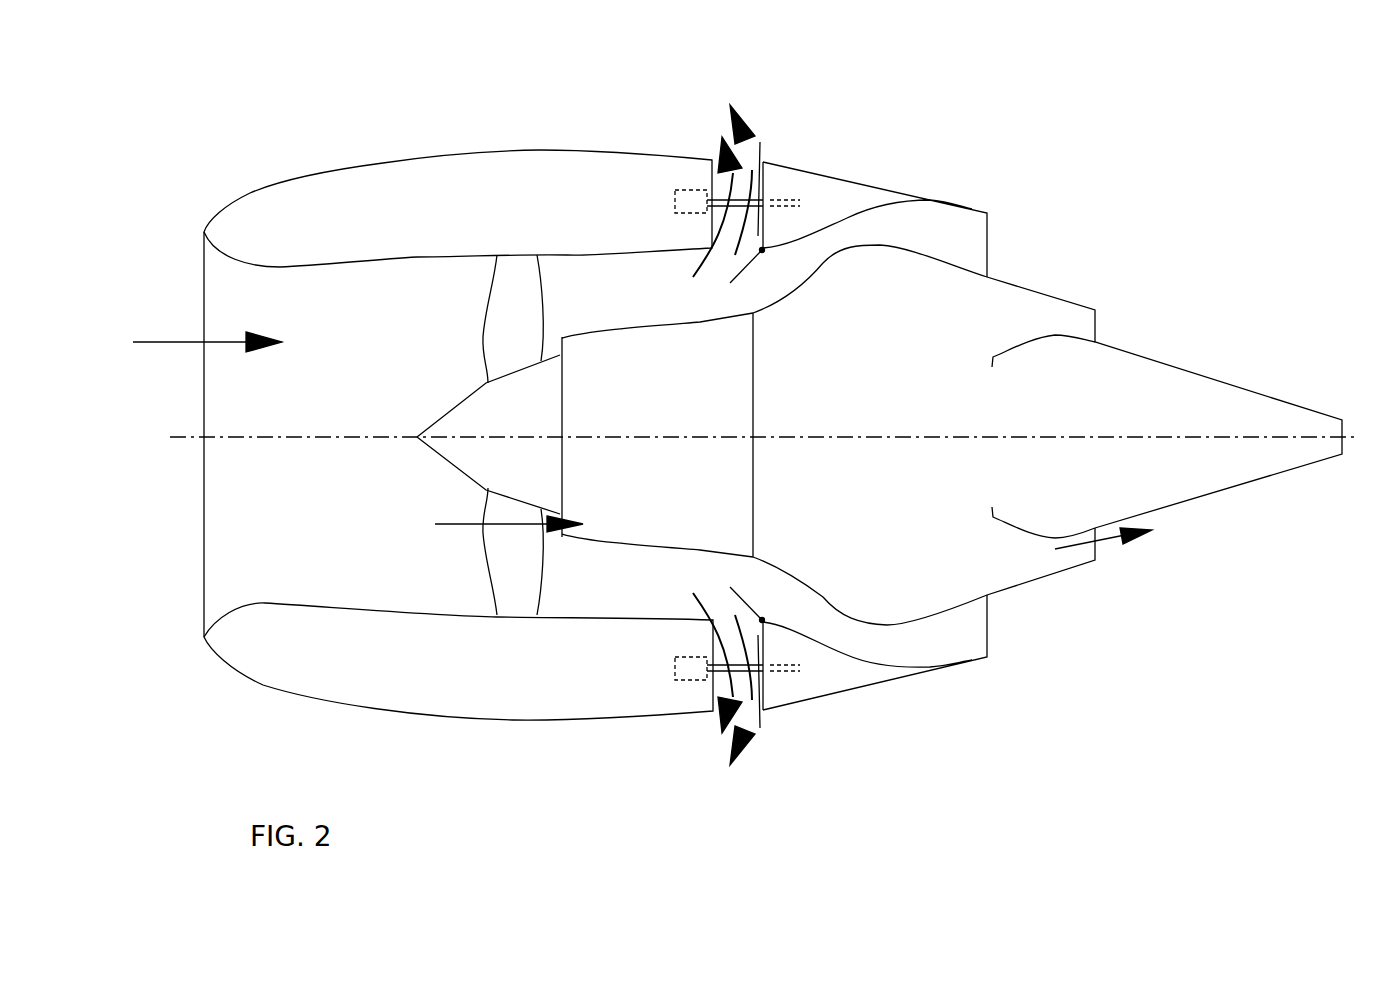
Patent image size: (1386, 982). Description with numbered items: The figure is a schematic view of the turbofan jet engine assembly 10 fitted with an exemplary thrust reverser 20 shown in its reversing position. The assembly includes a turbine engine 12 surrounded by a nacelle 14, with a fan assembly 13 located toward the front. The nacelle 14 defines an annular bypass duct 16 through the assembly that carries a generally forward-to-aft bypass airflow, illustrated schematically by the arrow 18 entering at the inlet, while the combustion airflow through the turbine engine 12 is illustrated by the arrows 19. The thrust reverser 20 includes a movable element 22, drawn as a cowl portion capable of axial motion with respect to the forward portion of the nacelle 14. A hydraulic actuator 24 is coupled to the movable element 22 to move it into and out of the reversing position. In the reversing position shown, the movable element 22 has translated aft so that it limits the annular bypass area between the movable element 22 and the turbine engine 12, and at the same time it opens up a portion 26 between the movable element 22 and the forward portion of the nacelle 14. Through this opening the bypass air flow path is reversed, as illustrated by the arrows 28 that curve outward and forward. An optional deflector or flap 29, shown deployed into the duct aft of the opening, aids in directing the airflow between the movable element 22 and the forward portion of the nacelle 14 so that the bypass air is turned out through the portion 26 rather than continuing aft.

The turbofan jet engine assembly 10 is at (225, 166).
The turbine engine 12 is at (648, 362).
The fan assembly 13 is at (510, 275).
The nacelle 14 is at (328, 173).
The annular bypass duct 16 is at (582, 287).
The bypass airflow arrow 18 is at (183, 338).
The combustion airflow arrows 19 is at (510, 527).
The thrust reverser 20 is at (810, 115).
The movable element 22 is at (798, 163).
The hydraulic actuator 24 is at (760, 142).
The portion 26 is at (716, 192).
The reversed airflow arrows 28 is at (757, 133).
The deflector or flap 29 is at (753, 262).